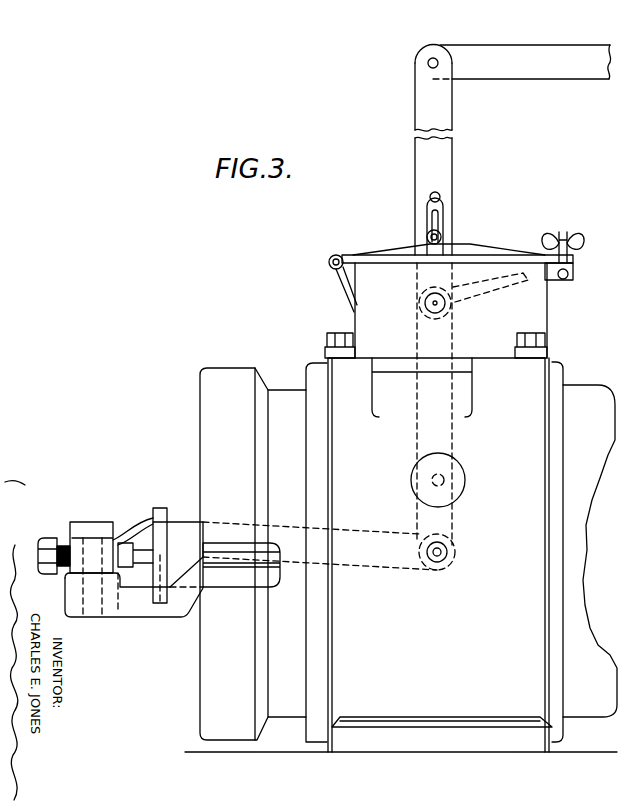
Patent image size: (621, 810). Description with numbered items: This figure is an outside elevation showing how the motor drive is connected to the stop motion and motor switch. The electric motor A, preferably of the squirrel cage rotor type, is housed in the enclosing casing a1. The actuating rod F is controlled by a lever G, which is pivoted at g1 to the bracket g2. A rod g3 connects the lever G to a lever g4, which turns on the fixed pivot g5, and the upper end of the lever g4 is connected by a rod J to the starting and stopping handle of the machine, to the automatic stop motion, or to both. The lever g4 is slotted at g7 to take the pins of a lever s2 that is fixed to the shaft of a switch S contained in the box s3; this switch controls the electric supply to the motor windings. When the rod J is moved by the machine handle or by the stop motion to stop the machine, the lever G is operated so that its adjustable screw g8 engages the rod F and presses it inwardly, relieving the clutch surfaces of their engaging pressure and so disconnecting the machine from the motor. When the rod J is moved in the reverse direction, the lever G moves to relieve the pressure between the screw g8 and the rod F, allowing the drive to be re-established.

The rod J is at (537, 70).
The lever g4 is at (422, 143).
The lever s2 is at (425, 214).
The slot g7 is at (441, 197).
The switch S is at (441, 236).
The box s3 is at (375, 308).
The enclosing casing a1 is at (495, 708).
The electric motor A is at (283, 400).
The fixed pivot g5 is at (445, 476).
The rod g3 is at (92, 533).
The adjustable screw g8 is at (49, 540).
The actuating rod F is at (127, 550).
The bracket g2 is at (144, 605).
The pivot g1 is at (104, 603).
The lever G is at (92, 556).